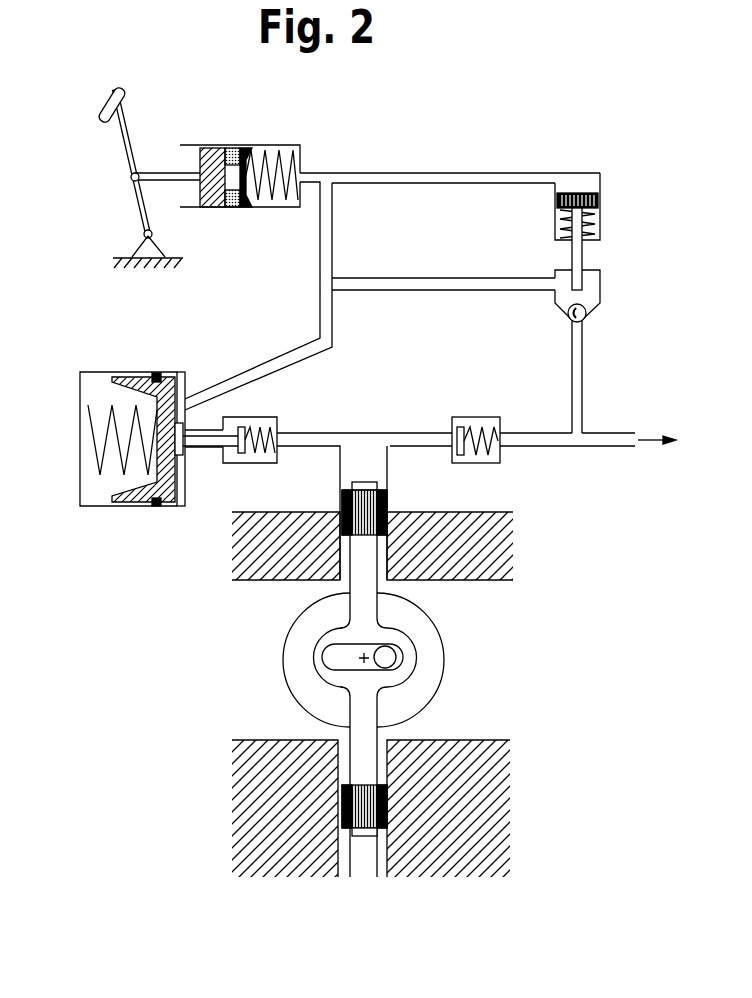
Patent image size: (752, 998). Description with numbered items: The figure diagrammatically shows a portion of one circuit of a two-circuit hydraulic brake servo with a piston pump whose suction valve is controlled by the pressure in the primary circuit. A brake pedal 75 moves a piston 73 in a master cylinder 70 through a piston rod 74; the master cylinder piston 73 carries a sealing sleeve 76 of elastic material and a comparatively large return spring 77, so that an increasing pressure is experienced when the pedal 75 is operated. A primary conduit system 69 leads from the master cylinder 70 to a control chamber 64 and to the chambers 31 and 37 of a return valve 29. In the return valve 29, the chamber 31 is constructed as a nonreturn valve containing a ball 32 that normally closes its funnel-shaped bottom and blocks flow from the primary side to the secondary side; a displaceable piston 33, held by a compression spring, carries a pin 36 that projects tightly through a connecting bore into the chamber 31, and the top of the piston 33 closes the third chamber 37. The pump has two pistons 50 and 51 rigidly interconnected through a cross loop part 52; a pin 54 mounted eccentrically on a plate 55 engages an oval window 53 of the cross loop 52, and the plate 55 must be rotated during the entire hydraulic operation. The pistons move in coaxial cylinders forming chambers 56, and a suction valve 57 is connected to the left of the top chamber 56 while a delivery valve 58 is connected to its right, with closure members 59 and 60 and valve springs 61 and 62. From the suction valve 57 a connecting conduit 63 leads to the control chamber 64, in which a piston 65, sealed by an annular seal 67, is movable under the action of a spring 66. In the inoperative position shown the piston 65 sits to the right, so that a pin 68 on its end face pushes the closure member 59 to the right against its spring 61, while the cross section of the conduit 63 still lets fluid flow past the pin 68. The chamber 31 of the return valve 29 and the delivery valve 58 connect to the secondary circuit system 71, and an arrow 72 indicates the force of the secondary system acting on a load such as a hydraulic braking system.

The return valve 29 is at (634, 217).
The chamber 31 is at (590, 292).
The ball 32 is at (588, 317).
The piston 33 is at (600, 199).
The pin 36 is at (584, 258).
The third chamber 37 is at (585, 184).
The piston 50 is at (390, 520).
The piston 51 is at (372, 806).
The cross loop part 52 is at (403, 643).
The oval window 53 is at (330, 657).
The pin 54 is at (392, 654).
The plate 55 is at (414, 700).
The chamber 56 is at (362, 446).
The suction valve 57 is at (266, 418).
The delivery valve 58 is at (493, 418).
The valve closure member 59 is at (243, 455).
The valve closure member 60 is at (465, 465).
The valve spring 61 is at (279, 452).
The valve spring 62 is at (492, 460).
The connecting conduit 63 is at (214, 450).
The control chamber 64 is at (187, 382).
The piston 65 is at (118, 372).
The spring 66 is at (82, 436).
The annular seal 67 is at (158, 374).
The pin 68 is at (197, 440).
The primary conduit system 69 is at (333, 248).
The master cylinder 70 is at (262, 208).
The secondary circuit system 71 is at (590, 445).
The arrow 72 is at (642, 437).
The piston 73 is at (212, 145).
The piston rod 74 is at (163, 178).
The brake pedal 75 is at (128, 152).
The sealing sleeve 76 is at (233, 144).
The return spring 77 is at (298, 174).